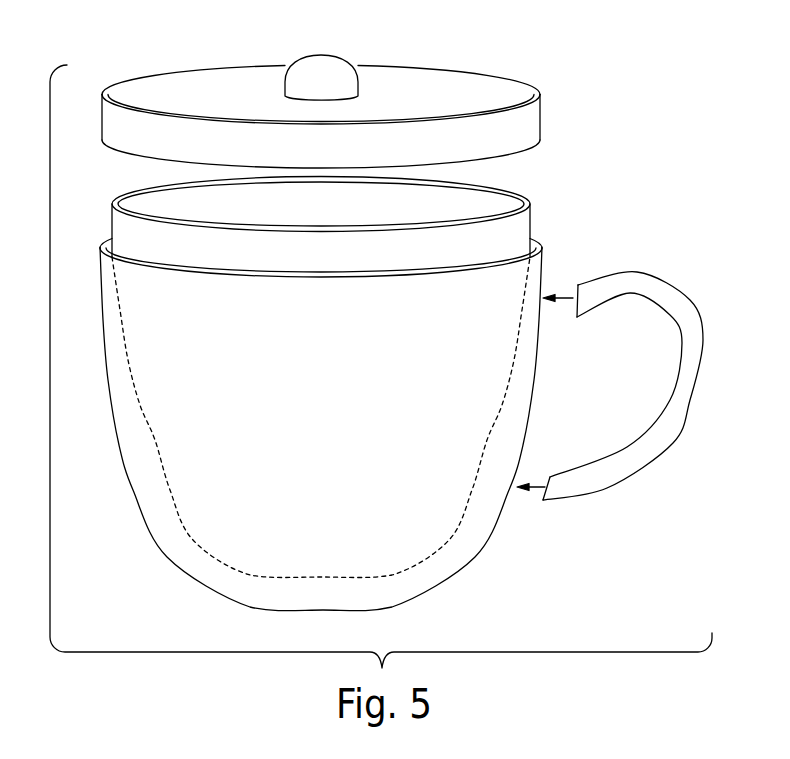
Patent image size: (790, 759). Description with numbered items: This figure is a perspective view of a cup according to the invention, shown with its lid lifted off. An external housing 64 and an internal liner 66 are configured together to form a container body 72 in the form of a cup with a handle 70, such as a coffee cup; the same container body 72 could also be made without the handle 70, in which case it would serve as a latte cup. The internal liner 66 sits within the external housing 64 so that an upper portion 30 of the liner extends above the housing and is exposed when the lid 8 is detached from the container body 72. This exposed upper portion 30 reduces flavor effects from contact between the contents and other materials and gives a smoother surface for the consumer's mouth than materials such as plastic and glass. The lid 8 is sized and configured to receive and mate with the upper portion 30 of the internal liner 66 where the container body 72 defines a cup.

The lid 8 is at (530, 121).
The upper portion 30 is at (326, 217).
The external housing 64 is at (105, 345).
The internal liner 66 is at (122, 228).
The handle 70 is at (672, 405).
The container body 72 is at (326, 363).